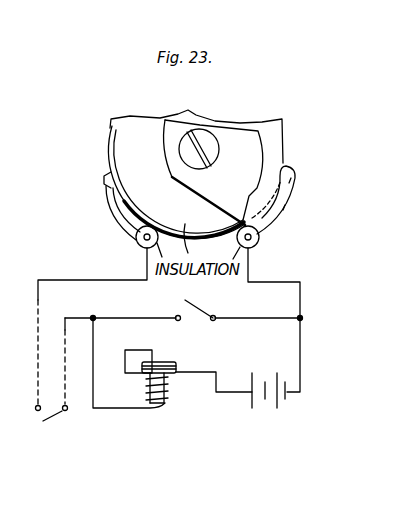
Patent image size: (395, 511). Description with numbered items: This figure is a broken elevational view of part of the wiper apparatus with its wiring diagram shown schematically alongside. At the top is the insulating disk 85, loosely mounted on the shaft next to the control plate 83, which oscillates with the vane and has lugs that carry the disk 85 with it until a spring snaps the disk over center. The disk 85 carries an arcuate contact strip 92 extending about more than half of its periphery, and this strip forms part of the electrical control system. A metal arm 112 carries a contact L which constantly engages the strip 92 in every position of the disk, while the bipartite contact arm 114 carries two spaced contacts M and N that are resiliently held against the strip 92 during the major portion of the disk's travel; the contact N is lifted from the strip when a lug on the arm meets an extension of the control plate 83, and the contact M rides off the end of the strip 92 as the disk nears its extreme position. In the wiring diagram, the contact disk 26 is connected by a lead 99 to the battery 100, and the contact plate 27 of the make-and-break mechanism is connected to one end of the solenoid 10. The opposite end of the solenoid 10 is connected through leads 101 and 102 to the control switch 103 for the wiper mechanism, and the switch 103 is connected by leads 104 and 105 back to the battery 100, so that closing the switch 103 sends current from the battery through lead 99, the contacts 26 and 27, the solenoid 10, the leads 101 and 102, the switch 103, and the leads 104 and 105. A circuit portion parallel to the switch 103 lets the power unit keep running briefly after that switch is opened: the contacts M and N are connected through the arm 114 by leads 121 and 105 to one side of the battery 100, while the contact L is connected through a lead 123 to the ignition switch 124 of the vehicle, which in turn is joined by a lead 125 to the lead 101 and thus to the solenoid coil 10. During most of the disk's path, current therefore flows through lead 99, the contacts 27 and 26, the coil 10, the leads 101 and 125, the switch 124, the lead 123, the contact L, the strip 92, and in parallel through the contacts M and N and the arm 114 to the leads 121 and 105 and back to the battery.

The insulating disk 85 is at (141, 126).
The arcuate contact strip 92 is at (109, 148).
The control plate 83 is at (213, 172).
The contact L is at (107, 178).
The metal arm 112 is at (112, 218).
The contact arm 114 is at (282, 225).
The contact M is at (298, 172).
The contact N is at (288, 208).
The lead 123 is at (70, 279).
The lead 125 is at (91, 316).
The ignition switch 124 is at (58, 424).
The lead 102 is at (153, 315).
The lead 101 is at (95, 341).
The control switch 103 is at (204, 302).
The lead 104 is at (247, 319).
The lead 121 is at (282, 281).
The lead 105 is at (302, 356).
The lead 99 is at (227, 394).
The battery 100 is at (280, 409).
The contact disk 26 is at (178, 373).
The contact plate 27 is at (163, 364).
The solenoid 10 is at (147, 389).